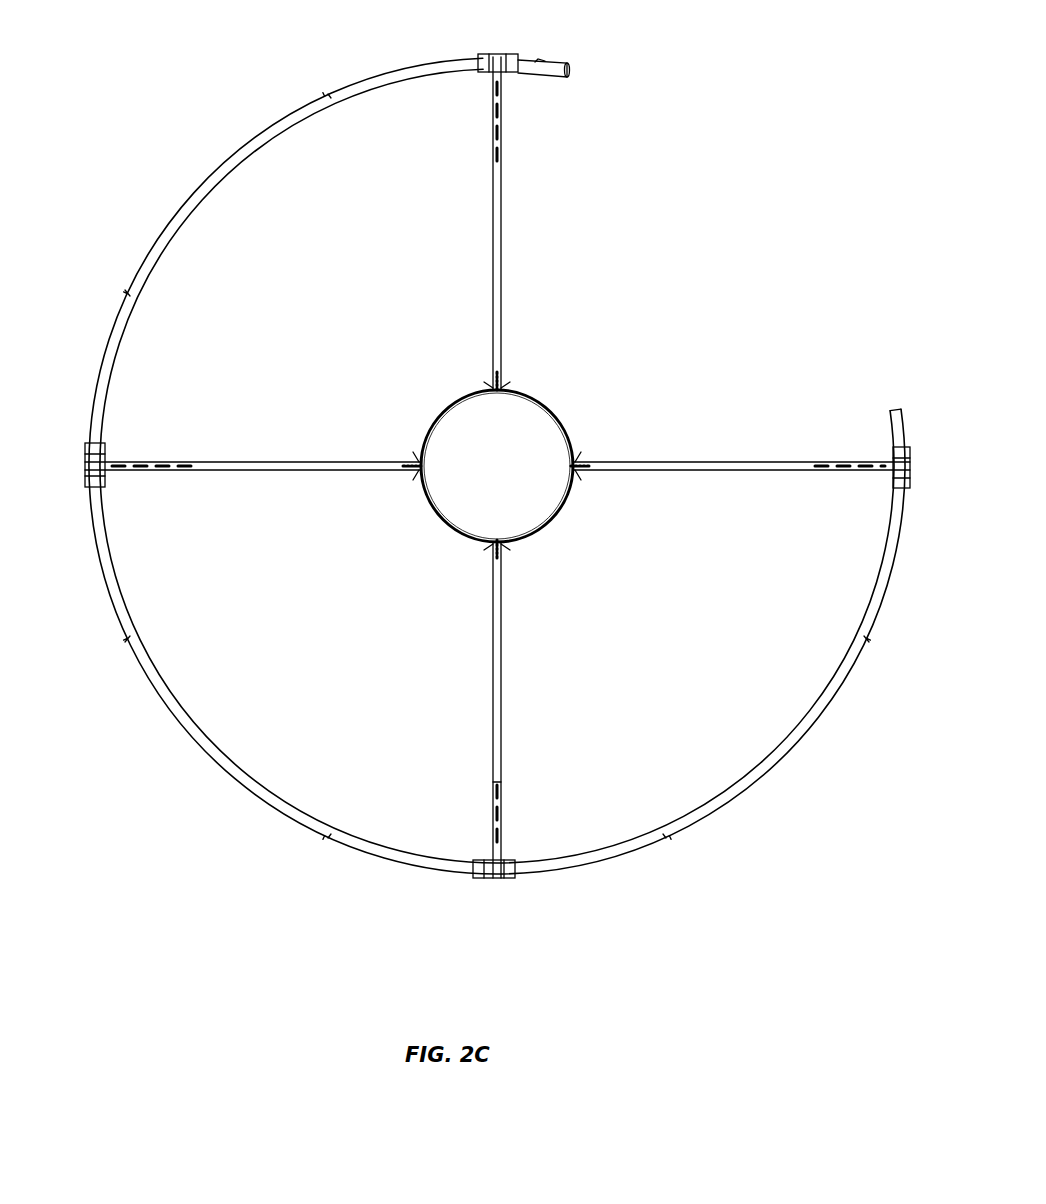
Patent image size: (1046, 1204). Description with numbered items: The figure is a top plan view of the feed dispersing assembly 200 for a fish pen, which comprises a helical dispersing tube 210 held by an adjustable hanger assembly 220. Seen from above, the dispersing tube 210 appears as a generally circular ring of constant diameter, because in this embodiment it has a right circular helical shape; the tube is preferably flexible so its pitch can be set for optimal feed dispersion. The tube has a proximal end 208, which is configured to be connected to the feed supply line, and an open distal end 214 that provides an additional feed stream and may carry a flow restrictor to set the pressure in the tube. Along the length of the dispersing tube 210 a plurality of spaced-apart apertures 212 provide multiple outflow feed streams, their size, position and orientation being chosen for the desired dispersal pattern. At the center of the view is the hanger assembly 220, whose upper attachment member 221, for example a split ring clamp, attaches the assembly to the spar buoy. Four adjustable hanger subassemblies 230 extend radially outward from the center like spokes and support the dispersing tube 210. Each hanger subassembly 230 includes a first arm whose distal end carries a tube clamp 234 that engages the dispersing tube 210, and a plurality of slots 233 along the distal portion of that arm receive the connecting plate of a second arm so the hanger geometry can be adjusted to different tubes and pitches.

The feed dispersing assembly 200 is at (782, 204).
The proximal end 208 is at (568, 66).
The helical dispersing tube 210 is at (268, 126).
The apertures 212 is at (322, 94).
The distal end 214 is at (900, 406).
The hanger assembly 220 is at (568, 538).
The upper attachment member 221 is at (556, 410).
The adjustable hanger subassemblies 230 is at (518, 214).
The slots 233 is at (494, 112).
The tube clamp 234 is at (510, 54).